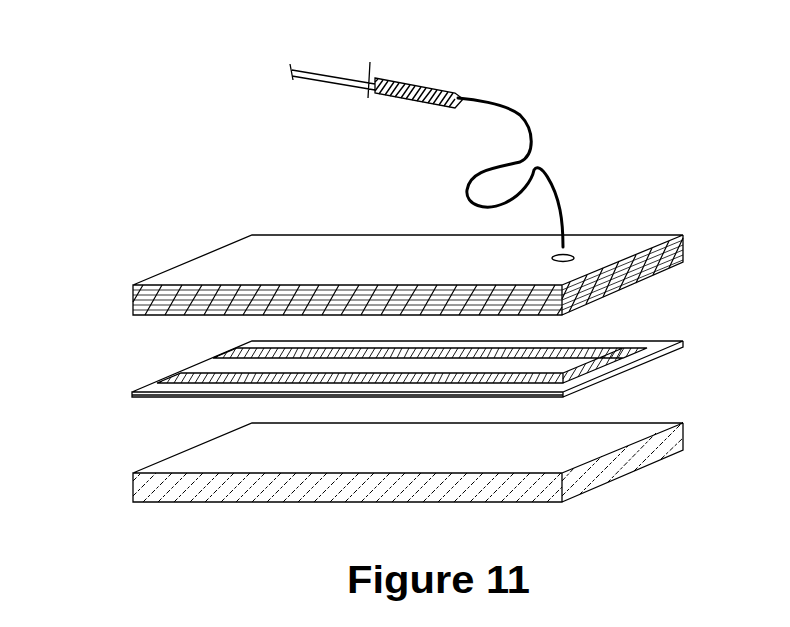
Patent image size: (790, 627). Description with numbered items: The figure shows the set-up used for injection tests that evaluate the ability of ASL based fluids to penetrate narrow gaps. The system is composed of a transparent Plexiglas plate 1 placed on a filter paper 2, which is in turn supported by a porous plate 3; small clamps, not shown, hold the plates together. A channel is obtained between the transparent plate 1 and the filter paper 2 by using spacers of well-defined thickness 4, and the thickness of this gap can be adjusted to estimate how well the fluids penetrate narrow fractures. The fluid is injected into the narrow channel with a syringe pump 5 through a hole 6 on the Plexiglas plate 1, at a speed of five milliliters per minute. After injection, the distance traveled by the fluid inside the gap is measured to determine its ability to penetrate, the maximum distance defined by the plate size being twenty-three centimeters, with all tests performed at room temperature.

The transparent Plexiglas plate 1 is at (408, 275).
The filter paper 2 is at (647, 383).
The porous plate 3 is at (408, 462).
The spacers of well-defined thickness 4 is at (127, 370).
The syringe pump 5 is at (426, 137).
The hole 6 is at (578, 259).